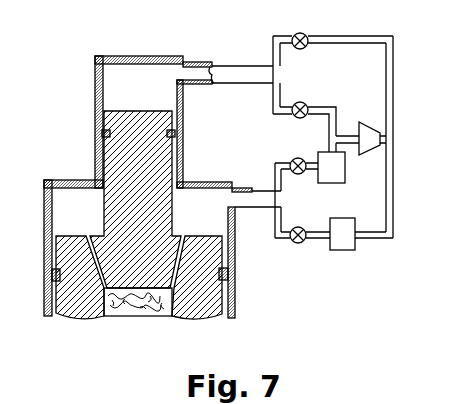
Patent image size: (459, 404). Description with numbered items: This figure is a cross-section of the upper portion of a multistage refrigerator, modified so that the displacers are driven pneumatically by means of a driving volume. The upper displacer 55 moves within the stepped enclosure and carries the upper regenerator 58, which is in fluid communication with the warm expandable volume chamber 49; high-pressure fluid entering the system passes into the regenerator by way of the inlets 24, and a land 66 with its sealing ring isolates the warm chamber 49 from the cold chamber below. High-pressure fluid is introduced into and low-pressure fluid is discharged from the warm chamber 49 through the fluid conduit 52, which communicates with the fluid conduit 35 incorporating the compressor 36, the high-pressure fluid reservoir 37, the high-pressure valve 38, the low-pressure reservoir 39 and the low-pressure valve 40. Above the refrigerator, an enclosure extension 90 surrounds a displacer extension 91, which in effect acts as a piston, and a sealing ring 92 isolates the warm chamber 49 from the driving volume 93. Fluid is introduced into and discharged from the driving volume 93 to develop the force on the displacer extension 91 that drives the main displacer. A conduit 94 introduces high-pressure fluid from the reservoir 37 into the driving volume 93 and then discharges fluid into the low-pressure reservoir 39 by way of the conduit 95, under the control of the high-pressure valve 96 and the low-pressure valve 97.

The inlets 24 is at (93, 252).
The fluid conduit 35 is at (388, 196).
The compressor 36 is at (365, 131).
The high-pressure fluid reservoir 37 is at (345, 249).
The high-pressure valve 38 is at (298, 243).
The low-pressure reservoir 39 is at (343, 177).
The low-pressure valve 40 is at (298, 174).
The warm expandable volume chamber 49 is at (199, 206).
The fluid conduit 52 is at (240, 197).
The upper displacer 55 is at (205, 300).
The upper regenerator 58 is at (128, 305).
The land 66 is at (230, 270).
The enclosure extension 90 is at (128, 106).
The displacer extension 91 is at (127, 195).
The sealing ring 92 is at (114, 147).
The driving volume 93 is at (121, 77).
The conduit 94 is at (230, 77).
The conduit 95 is at (365, 36).
The high-pressure valve 96 is at (302, 48).
The low-pressure valve 97 is at (296, 117).